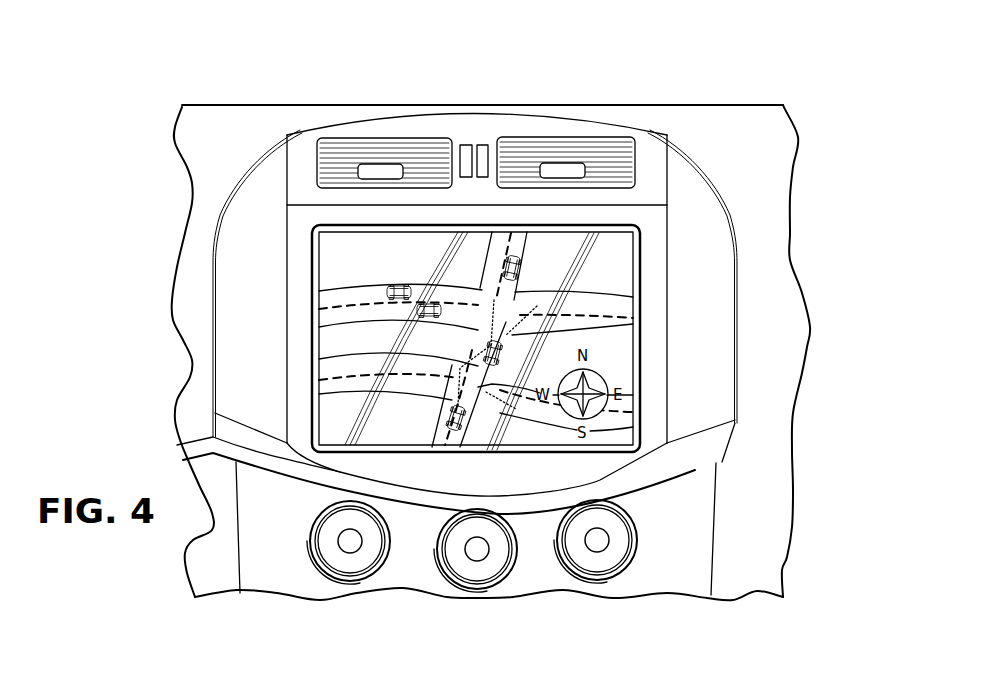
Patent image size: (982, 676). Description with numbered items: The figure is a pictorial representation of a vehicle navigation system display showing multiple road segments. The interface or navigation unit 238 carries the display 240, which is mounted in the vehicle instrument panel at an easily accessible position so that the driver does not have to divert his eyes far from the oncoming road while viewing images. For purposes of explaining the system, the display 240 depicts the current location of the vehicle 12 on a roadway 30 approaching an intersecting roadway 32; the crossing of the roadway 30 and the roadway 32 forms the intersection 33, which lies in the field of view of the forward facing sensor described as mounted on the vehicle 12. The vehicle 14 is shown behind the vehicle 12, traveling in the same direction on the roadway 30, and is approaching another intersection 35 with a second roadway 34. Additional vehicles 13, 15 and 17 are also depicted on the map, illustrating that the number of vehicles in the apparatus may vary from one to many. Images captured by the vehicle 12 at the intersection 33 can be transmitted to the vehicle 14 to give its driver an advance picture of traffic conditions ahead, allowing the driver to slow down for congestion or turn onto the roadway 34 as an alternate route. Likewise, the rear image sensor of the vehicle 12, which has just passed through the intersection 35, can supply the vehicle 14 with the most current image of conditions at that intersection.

The navigation unit 238 is at (229, 156).
The display 240 is at (337, 338).
The vehicle 12 is at (502, 358).
The vehicle 13 is at (386, 292).
The vehicle 14 is at (462, 398).
The vehicle 15 is at (426, 315).
The vehicle 17 is at (506, 268).
The roadway 30 is at (480, 337).
The intersecting roadway 32 is at (525, 302).
The intersection 33 is at (500, 308).
The second roadway 34 is at (519, 408).
The intersection 35 is at (470, 383).